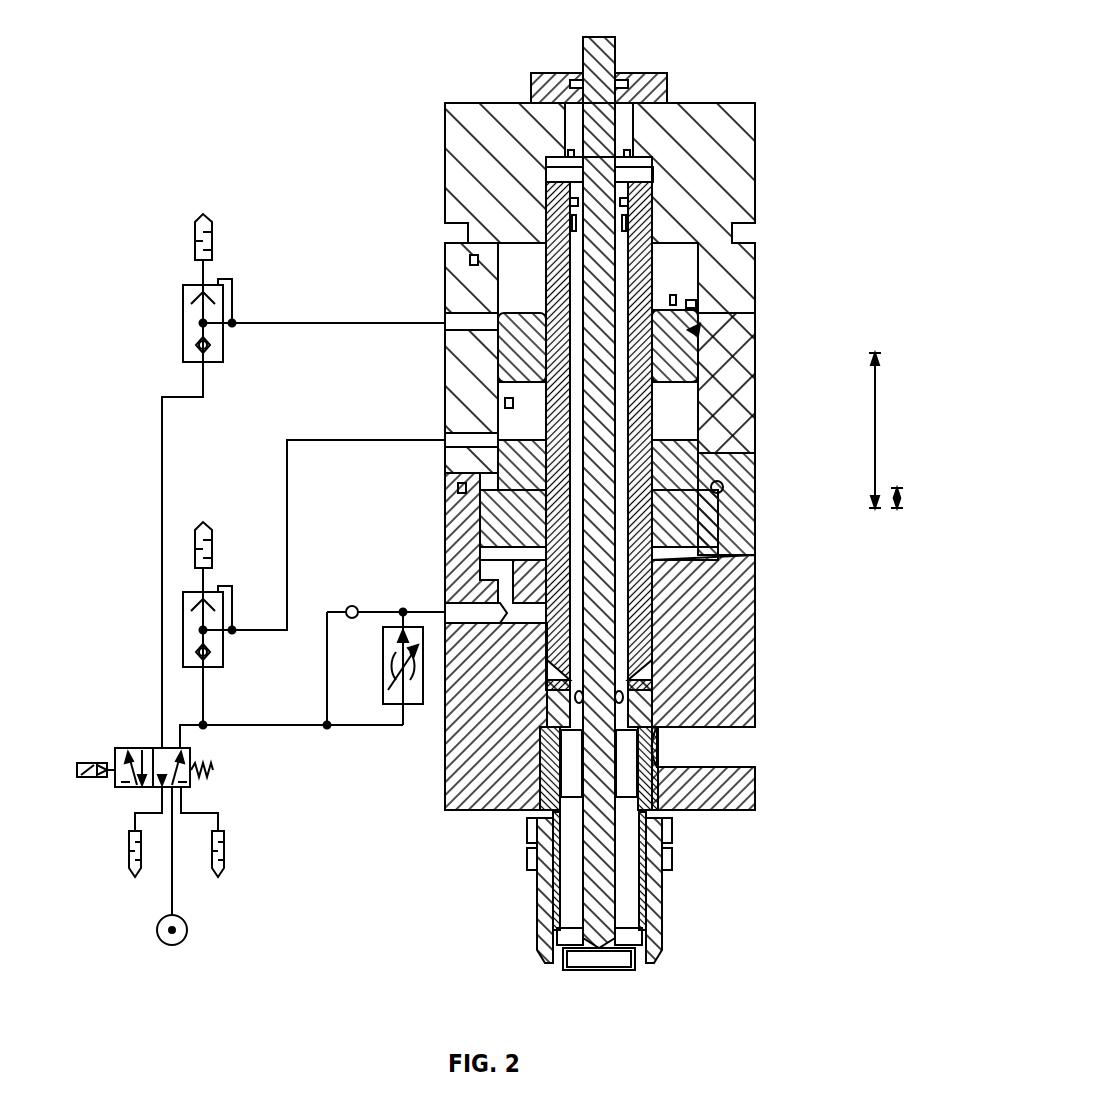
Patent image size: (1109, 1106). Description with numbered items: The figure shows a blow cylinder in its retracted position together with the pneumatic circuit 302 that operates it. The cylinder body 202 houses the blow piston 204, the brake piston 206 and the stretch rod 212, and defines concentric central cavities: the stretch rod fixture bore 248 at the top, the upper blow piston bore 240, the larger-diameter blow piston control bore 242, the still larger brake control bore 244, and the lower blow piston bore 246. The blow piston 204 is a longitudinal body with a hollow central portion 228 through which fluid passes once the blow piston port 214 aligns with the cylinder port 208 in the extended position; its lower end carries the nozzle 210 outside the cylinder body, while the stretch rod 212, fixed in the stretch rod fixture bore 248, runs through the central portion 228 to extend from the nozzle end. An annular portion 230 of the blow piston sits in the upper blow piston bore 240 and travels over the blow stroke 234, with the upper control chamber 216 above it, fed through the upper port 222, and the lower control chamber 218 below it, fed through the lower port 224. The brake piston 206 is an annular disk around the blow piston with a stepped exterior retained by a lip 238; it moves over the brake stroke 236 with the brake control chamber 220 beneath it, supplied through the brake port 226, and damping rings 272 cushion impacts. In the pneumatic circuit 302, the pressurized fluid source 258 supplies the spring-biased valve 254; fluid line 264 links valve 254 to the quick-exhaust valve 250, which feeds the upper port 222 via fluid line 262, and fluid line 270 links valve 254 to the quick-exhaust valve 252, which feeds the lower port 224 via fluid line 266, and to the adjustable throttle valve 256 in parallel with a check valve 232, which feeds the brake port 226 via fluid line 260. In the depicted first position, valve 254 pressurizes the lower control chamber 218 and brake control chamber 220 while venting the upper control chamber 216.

The cylinder body 202 is at (742, 124).
The blow piston 204 is at (657, 216).
The brake piston 206 is at (722, 548).
The cylinder port 208 is at (735, 783).
The nozzle 210 is at (655, 950).
The stretch rod 212 is at (602, 878).
The blow piston port 214 is at (742, 748).
The upper control chamber 216 is at (696, 330).
The lower control chamber 218 is at (683, 398).
The brake control chamber 220 is at (705, 565).
The upper port 222 is at (462, 312).
The lower port 224 is at (458, 440).
The brake port 226 is at (500, 582).
The hollow central portion 228 is at (640, 688).
The annular portion 230 is at (703, 377).
The check valve 232 is at (352, 606).
The blow stroke 234 is at (876, 430).
The brake stroke 236 is at (902, 500).
The lip 238 is at (725, 487).
The upper blow piston bore 240 is at (645, 240).
The blow piston control bore 242 is at (722, 403).
The brake control bore 244 is at (705, 512).
The lower blow piston bore 246 is at (622, 638).
The stretch rod fixture bore 248 is at (628, 133).
The valve 250 is at (192, 328).
The valve 252 is at (192, 633).
The valve 254 is at (137, 747).
The valve 256 is at (390, 647).
The pressurized fluid source 258 is at (172, 945).
The fluid line 260 is at (414, 610).
The fluid line 262 is at (288, 322).
The fluid line 264 is at (160, 452).
The fluid line 266 is at (316, 440).
The fluid line 270 is at (183, 735).
The damping ring 272 is at (472, 258).
The pneumatic circuit 302 is at (220, 170).